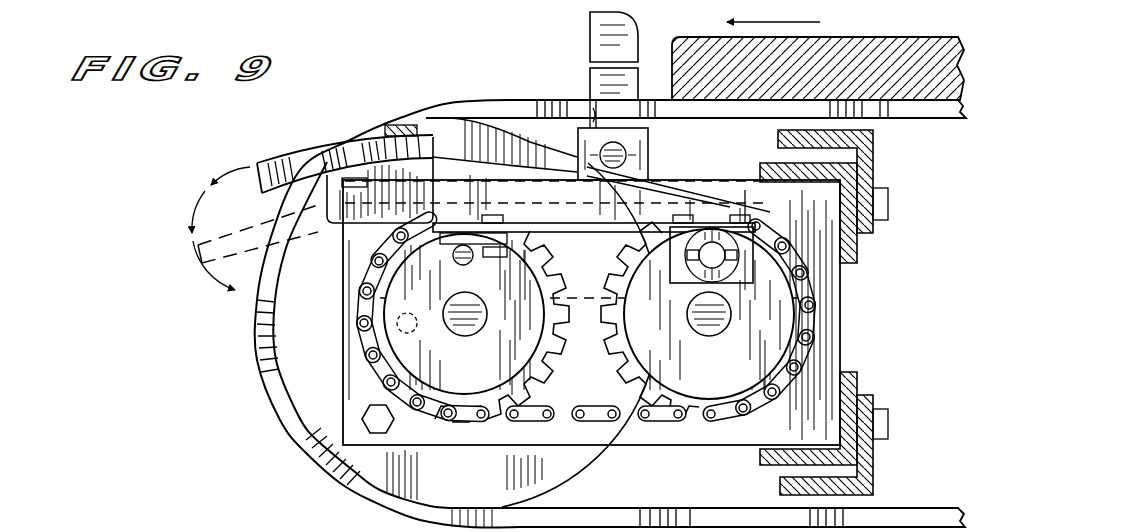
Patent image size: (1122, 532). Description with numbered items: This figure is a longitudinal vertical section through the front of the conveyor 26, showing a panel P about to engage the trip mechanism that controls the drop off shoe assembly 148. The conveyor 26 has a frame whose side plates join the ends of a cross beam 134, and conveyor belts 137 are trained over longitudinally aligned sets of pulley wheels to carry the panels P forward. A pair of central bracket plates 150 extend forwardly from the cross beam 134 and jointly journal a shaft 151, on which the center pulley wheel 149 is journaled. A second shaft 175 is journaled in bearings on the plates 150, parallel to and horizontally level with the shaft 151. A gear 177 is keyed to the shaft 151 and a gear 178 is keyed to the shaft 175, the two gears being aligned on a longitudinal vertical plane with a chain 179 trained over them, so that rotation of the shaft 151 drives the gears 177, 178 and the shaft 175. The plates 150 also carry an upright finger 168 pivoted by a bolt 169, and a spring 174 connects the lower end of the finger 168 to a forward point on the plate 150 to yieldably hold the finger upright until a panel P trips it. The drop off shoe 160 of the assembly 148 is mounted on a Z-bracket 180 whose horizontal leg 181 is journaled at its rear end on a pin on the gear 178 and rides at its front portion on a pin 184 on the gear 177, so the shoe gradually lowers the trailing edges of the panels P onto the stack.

The conveyor 26 is at (510, 90).
The cross beam 134 is at (860, 250).
The conveyor belts 137 is at (707, 515).
The drop off shoe assembly 148 is at (441, 130).
The center pulley wheel 149 is at (327, 365).
The central bracket plates 150 is at (828, 342).
The shaft 151 is at (468, 326).
The drop off shoe 160 is at (308, 158).
The upright finger 168 is at (590, 26).
The bolt 169 is at (630, 158).
The spring 174 is at (588, 124).
The shaft 175 is at (720, 328).
The gear 177 is at (507, 353).
The gear 178 is at (646, 311).
The chain 179 is at (820, 297).
The Z-bracket 180 is at (318, 201).
The horizontal leg 181 is at (550, 230).
The pin 184 is at (484, 258).
The panels P is at (863, 53).